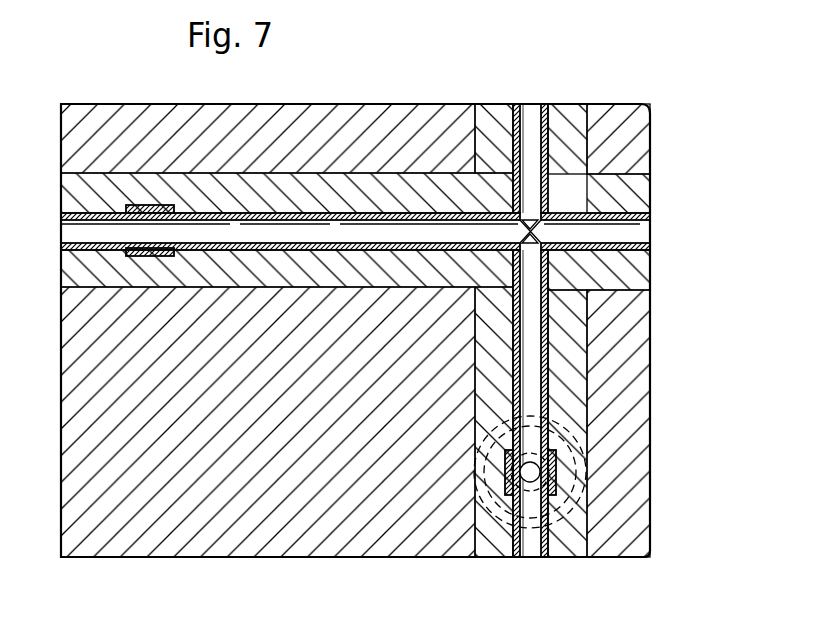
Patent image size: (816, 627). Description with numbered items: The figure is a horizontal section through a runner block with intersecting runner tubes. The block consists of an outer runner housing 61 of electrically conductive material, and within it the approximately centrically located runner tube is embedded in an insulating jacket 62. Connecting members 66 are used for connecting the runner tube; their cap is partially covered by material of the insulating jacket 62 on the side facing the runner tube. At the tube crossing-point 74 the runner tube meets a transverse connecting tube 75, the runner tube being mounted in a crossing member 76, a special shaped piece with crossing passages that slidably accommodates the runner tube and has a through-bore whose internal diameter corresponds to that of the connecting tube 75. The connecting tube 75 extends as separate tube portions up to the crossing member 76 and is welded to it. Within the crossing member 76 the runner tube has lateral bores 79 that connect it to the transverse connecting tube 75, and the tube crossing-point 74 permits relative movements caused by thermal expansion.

The runner housing 61 is at (352, 125).
The insulating jacket 62 is at (438, 190).
The connecting members 66 is at (135, 205).
The tube crossing-point 74 is at (557, 198).
The transverse connecting tube 75 is at (537, 200).
The crossing member 76 is at (550, 251).
The lateral bores 79 is at (555, 210).